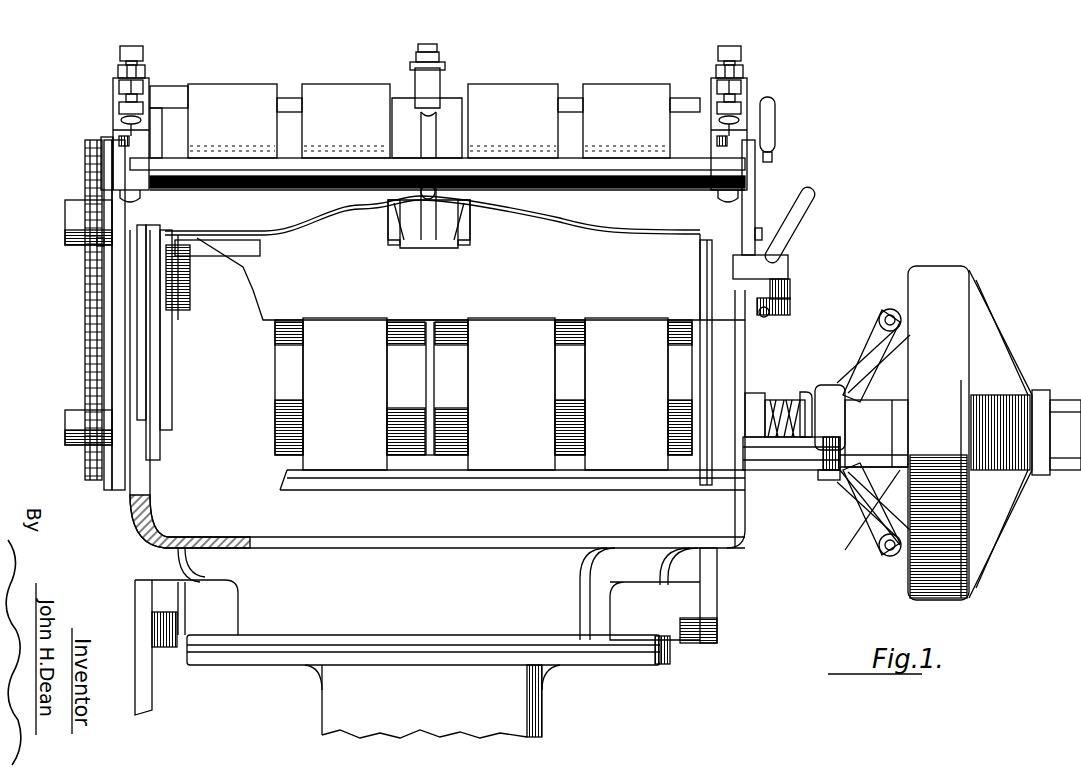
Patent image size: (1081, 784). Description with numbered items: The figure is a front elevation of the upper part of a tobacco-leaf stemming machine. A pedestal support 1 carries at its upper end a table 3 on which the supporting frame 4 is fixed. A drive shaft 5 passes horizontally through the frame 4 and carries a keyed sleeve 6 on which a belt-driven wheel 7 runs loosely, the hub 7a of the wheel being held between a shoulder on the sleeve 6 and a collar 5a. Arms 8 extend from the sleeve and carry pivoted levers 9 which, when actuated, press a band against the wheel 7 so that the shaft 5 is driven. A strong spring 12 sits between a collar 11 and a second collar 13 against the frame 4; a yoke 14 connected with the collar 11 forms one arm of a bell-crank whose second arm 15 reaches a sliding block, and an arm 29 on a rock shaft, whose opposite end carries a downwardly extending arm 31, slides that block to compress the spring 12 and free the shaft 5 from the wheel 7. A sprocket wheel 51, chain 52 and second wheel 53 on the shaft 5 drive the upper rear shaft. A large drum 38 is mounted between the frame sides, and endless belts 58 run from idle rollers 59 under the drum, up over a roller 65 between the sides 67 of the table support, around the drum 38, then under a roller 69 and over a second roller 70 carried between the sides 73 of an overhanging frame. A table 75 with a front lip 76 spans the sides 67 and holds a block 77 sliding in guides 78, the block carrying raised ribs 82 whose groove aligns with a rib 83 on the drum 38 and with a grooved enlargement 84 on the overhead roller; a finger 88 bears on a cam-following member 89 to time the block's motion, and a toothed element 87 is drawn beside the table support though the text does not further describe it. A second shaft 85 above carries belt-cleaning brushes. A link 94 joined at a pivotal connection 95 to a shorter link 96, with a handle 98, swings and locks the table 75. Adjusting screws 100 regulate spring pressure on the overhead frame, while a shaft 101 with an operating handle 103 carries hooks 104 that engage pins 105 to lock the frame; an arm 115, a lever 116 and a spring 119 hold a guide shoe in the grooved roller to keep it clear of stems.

The pedestal support 1 is at (532, 721).
The table 3 is at (622, 660).
The supporting frame 4 is at (333, 565).
The drive shaft 5 is at (870, 472).
The collar 5a is at (1040, 474).
The sleeve 6 is at (893, 420).
The wheel 7 is at (935, 557).
The hub 7a is at (998, 400).
The arms 8 is at (897, 352).
The levers 9 is at (870, 353).
The collar 11 is at (806, 400).
The spring 12 is at (781, 405).
The second collar 13 is at (753, 400).
The yoke 14 is at (843, 410).
The second arm 15 is at (795, 455).
The arm 29 is at (712, 563).
The downwardly extending arm 31 is at (150, 673).
The drum 38 is at (415, 445).
The sprocket wheel 51 is at (100, 138).
The chain 52 is at (92, 270).
The second wheel 53 is at (95, 447).
The endless belts 58 is at (265, 90).
The idle rollers 59 is at (165, 522).
The roller 65 is at (285, 340).
The sides 67 is at (158, 355).
The roller 69 is at (178, 131).
The second roller 70 is at (180, 90).
The sides of overhanging frame 73 is at (128, 155).
The table 75 is at (575, 229).
The lip 76 is at (530, 300).
The block 77 is at (455, 226).
The guides 78 is at (390, 232).
The raised ribs 82 is at (416, 215).
The rib 83 is at (432, 387).
The grooved stemming enlargement 84 is at (437, 135).
The second shaft 85 is at (233, 280).
The gear 87 is at (182, 308).
The finger 88 is at (137, 310).
The member 89 is at (137, 368).
The link 94 is at (790, 288).
The pivotal connection 95 is at (790, 307).
The shorter link 96 is at (763, 317).
The handle 98 is at (808, 217).
The adjusting screws 100 is at (135, 90).
The shaft 101 is at (525, 191).
The operating handle 103 is at (776, 122).
The hooks 104 is at (110, 219).
The pins 105 is at (97, 242).
The arm 115 is at (445, 68).
The lever 116 is at (428, 46).
The spring 119 is at (440, 58).